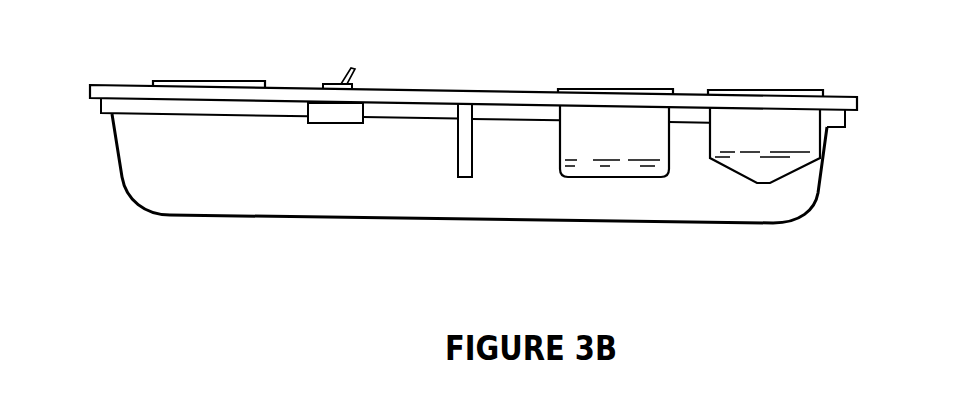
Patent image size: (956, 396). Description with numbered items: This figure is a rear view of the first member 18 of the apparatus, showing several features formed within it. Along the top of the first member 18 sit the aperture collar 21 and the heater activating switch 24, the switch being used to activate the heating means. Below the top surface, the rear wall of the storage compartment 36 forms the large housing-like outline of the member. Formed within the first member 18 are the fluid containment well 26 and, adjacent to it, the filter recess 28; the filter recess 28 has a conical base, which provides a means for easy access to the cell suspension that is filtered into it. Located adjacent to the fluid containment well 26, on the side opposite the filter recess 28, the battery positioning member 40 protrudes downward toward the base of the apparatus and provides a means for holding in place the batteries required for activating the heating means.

The first member 18 is at (422, 90).
The aperture collar 21 is at (205, 80).
The heater activating switch 24 is at (343, 82).
The fluid containment well 26 is at (618, 152).
The filter recess 28 is at (772, 143).
The storage compartment 36 is at (176, 187).
The battery positioning member 40 is at (463, 180).